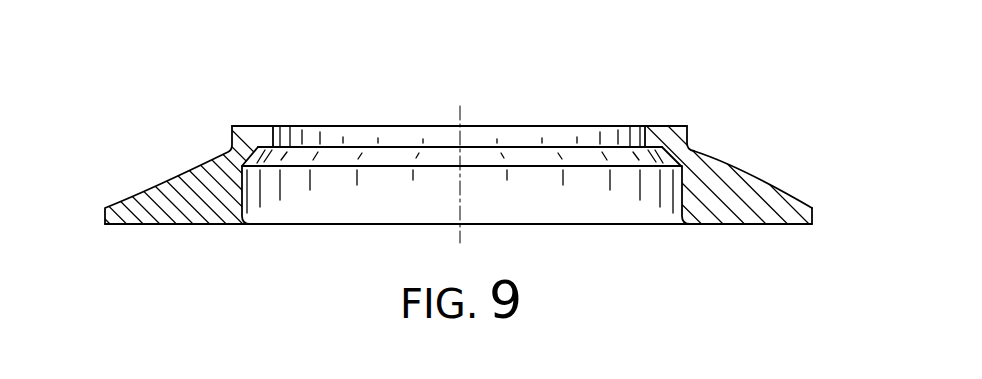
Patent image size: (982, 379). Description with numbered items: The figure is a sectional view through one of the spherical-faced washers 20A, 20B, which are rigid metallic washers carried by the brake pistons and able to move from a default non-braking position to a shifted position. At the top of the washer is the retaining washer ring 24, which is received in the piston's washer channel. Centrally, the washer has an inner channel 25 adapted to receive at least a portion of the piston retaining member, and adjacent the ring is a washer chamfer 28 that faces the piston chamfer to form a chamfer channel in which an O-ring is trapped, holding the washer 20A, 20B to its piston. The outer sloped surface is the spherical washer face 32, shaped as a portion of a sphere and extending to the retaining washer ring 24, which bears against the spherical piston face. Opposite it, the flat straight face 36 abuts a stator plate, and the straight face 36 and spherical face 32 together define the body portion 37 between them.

The spherical-faced washer 20A is at (436, 151).
The spherical-faced washer 20B is at (130, 113).
The retaining washer ring 24 is at (272, 132).
The inner channel 25 is at (242, 192).
The washer chamfer 28 is at (662, 154).
The spherical washer face 32 is at (748, 170).
The straight face 36 is at (737, 227).
The body portion 37 is at (758, 202).